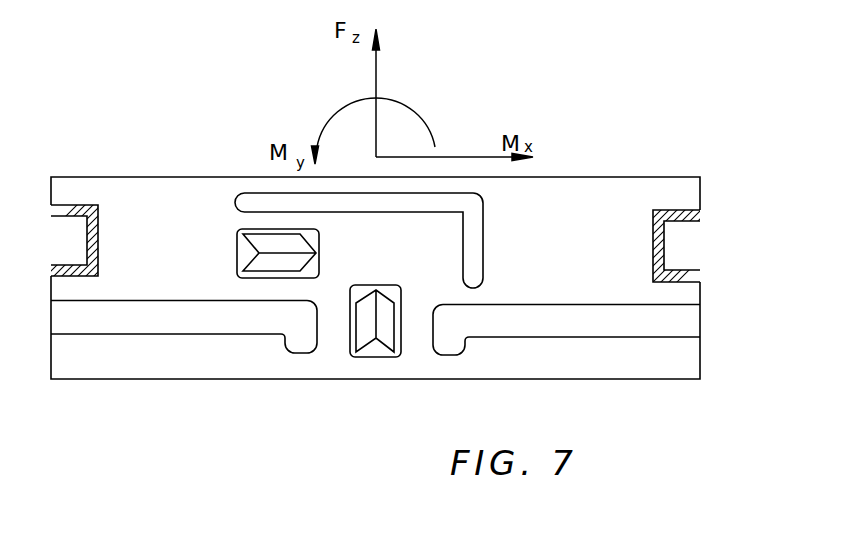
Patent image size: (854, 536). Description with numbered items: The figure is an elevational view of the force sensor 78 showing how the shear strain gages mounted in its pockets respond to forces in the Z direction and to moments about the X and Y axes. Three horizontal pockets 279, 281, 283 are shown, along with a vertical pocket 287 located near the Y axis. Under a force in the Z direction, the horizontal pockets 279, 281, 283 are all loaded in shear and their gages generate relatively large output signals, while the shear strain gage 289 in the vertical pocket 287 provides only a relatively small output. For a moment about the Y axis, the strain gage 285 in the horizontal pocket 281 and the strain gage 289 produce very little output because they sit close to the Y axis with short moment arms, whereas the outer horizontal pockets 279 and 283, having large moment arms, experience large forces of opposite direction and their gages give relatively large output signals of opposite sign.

The force sensor 78 is at (674, 126).
The horizontal pocket 279 is at (73, 207).
The horizontal pocket 283 is at (683, 210).
The horizontal pocket 281 is at (313, 265).
The strain gage 285 is at (260, 242).
The vertical pocket 287 is at (378, 352).
The shear strain gage 289 is at (362, 350).